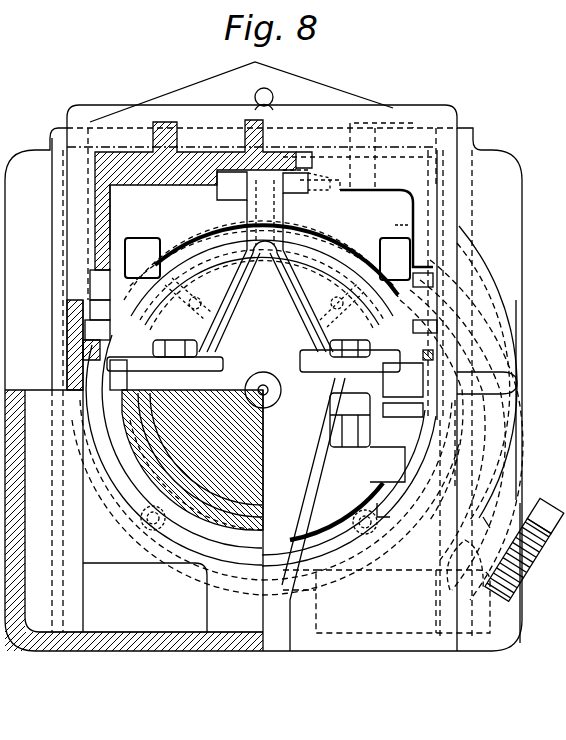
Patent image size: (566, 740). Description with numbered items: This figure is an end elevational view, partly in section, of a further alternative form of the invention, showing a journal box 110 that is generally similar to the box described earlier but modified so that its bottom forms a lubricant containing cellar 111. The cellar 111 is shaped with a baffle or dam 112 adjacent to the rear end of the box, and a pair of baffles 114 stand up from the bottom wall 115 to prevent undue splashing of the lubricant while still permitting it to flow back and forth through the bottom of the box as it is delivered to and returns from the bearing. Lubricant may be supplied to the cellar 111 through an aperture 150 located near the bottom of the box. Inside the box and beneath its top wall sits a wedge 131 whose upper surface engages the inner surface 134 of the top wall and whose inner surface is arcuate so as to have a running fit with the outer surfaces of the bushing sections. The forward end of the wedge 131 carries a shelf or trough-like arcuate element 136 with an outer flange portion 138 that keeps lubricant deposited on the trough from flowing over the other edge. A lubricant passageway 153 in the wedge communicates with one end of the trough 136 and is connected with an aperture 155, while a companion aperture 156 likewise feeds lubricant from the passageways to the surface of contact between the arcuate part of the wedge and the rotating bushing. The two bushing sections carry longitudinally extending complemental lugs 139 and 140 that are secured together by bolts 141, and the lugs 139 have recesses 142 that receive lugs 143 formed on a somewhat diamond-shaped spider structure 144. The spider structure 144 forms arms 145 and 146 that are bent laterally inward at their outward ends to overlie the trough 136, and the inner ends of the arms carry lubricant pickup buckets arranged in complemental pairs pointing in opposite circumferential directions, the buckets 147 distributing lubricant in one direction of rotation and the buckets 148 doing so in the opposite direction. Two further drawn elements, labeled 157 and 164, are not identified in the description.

The journal box 110 is at (470, 141).
The lubricant containing cellar 111 is at (57, 625).
The baffle or dam 112 is at (213, 630).
The baffles 114 is at (145, 623).
The bottom wall 115 is at (170, 647).
The wedge 131 is at (333, 194).
The inner surface 134 is at (178, 188).
The shelf or trough-like arcuate element 136 is at (332, 228).
The outer flange portion 138 is at (393, 233).
The lugs 139 is at (110, 378).
The lugs 140 is at (400, 421).
The bolts 141 is at (180, 343).
The recesses 142 is at (110, 364).
The lugs 143 is at (150, 368).
The spider structure 144 is at (286, 312).
The arm 145 is at (307, 197).
The arm 146 is at (290, 640).
The lubricant pickup buckets 147 is at (227, 182).
The lubricant pickup buckets 148 is at (296, 170).
The aperture 150 is at (450, 588).
The lubricant passageway 153 is at (133, 240).
The aperture 155 is at (83, 285).
The aperture 156 is at (460, 228).
The nozzle 157 is at (517, 502).
The spring 164 is at (390, 230).